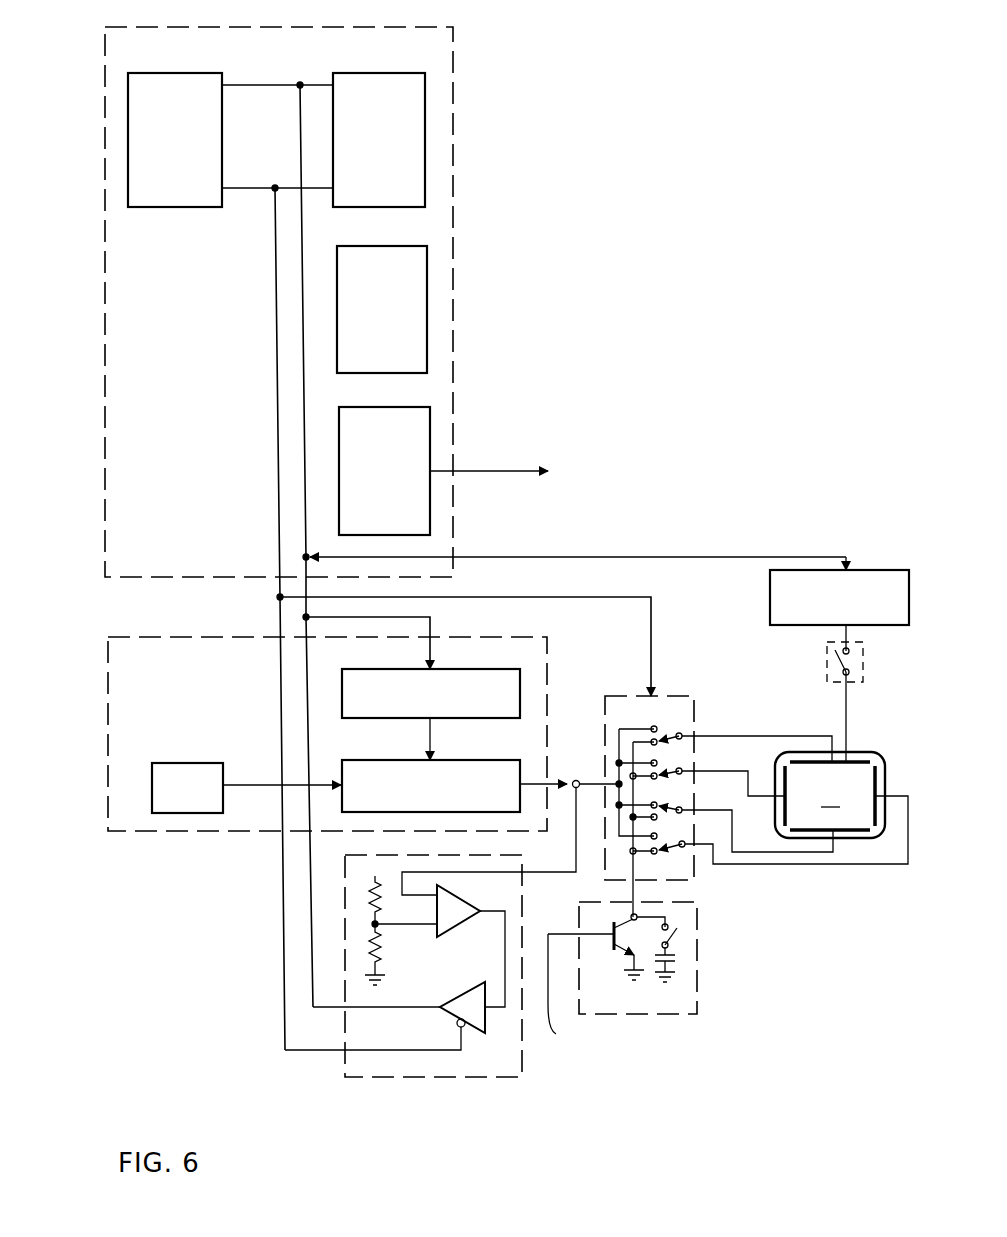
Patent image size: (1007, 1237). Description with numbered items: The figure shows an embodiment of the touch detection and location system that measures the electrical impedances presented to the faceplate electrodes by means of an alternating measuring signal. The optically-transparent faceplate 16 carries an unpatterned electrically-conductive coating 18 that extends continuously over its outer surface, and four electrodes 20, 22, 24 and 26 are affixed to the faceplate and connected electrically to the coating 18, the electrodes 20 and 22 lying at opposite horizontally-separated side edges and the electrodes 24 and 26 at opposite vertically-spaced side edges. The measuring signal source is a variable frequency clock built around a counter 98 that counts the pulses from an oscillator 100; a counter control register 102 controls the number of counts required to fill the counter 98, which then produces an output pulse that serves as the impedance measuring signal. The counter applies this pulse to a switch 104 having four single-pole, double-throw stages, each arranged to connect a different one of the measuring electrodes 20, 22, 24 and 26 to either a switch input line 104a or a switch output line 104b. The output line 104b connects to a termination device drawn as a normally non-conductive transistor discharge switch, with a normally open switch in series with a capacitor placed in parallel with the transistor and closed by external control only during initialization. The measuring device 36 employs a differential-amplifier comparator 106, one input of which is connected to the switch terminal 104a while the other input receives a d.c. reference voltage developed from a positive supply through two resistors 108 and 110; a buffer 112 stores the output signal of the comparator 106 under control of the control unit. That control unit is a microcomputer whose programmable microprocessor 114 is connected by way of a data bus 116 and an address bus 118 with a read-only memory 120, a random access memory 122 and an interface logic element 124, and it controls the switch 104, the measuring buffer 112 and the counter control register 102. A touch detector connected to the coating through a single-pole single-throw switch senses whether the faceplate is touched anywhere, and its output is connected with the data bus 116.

The programmable microprocessor 114 is at (186, 73).
The data bus 116 is at (299, 85).
The address bus 118 is at (248, 190).
The read-only memory 120 is at (372, 73).
The random access memory 122 is at (372, 246).
The interface logic element 124 is at (370, 407).
The oscillator 100 is at (188, 763).
The counter control register 102 is at (384, 668).
The counter 98 is at (388, 760).
The switch 104 is at (695, 712).
The switch input line 104a is at (585, 782).
The switch output line 104b is at (636, 890).
The differential-amplifier comparator 106 is at (450, 904).
The resistor 108 is at (382, 900).
The resistor 110 is at (382, 945).
The buffer 112 is at (468, 1000).
The measuring device 36 is at (482, 1078).
The faceplate 16 is at (886, 785).
The electrically-conductive coating 18 is at (830, 796).
The electrode 20 is at (785, 809).
The electrode 22 is at (878, 775).
The electrode 24 is at (858, 758).
The electrode 26 is at (845, 832).